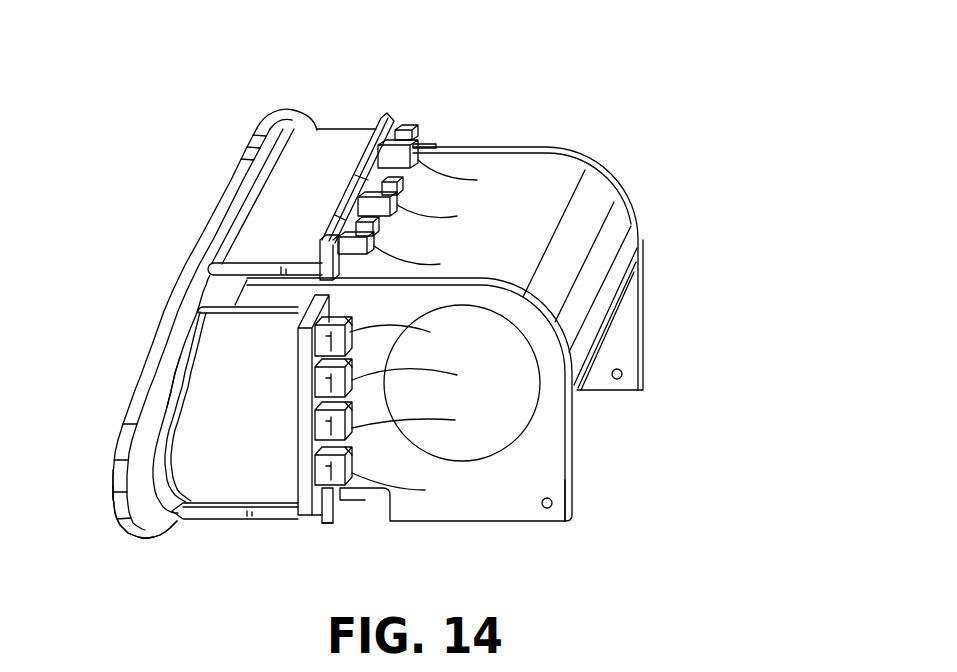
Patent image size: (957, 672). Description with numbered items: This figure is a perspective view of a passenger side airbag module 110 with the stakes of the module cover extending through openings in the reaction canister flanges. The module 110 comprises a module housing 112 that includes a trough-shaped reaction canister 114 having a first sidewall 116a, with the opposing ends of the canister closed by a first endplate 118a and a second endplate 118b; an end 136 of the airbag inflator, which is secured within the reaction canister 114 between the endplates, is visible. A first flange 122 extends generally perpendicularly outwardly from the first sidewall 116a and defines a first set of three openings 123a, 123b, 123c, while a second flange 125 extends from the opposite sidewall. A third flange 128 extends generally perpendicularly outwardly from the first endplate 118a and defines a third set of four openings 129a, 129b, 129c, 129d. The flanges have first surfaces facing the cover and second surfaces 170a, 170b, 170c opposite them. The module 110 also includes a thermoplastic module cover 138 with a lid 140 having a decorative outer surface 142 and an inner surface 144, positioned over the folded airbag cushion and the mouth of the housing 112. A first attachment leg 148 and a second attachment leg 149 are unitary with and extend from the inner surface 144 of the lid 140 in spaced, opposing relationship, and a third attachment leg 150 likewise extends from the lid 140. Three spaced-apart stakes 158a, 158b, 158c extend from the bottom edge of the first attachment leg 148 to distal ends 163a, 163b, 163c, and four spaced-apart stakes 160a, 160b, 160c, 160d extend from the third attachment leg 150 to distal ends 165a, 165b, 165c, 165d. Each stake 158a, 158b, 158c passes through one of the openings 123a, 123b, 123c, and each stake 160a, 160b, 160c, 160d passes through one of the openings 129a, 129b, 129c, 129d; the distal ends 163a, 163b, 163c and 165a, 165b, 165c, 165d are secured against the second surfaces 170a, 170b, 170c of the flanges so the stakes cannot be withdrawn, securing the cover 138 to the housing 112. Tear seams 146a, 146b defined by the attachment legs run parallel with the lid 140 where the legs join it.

The passenger side airbag module 110 is at (533, 68).
The module housing 112 is at (612, 160).
The reaction canister 114 is at (640, 250).
The first sidewall 116a is at (538, 165).
The first endplate 118a is at (563, 488).
The second endplate 118b is at (643, 347).
The first flange 122 is at (391, 112).
The opening of first set of openings 123a is at (341, 220).
The opening of first set of openings 123b is at (366, 172).
The opening of first set of openings 123c is at (372, 130).
The second flange 125 is at (333, 523).
The third flange 128 is at (297, 341).
The opening of third set of openings 129a is at (315, 352).
The opening of third set of openings 129b is at (315, 386).
The opening of third set of openings 129c is at (315, 427).
The opening of third set of openings 129d is at (315, 471).
The end of the inflator 136 is at (530, 413).
The module cover 138 is at (197, 233).
The lid 140 is at (280, 112).
The decorative outer surface 142 is at (115, 493).
The inner surface 144 is at (153, 525).
The tear seam 146a is at (158, 443).
The tear seam 146b is at (268, 162).
The first attachment leg 148 is at (240, 268).
The second attachment leg 149 is at (190, 522).
The third attachment leg 150 is at (175, 392).
The stake 158a is at (373, 240).
The stake 158b is at (397, 196).
The stake 158c is at (418, 138).
The stake 160a is at (335, 318).
The stake 160b is at (350, 366).
The stake 160c is at (350, 410).
The stake 160d is at (350, 449).
The distal end of stake 163a is at (374, 246).
The distal end of stake 163b is at (397, 205).
The distal end of stake 163c is at (418, 160).
The distal end of stake 165a is at (350, 332).
The distal end of stake 165b is at (352, 380).
The distal end of stake 165c is at (352, 428).
The distal end of stake 165d is at (352, 473).
The second surface of flange 170a is at (410, 122).
The second surface of flange 170b is at (337, 512).
The second surface of flange 170c is at (318, 523).